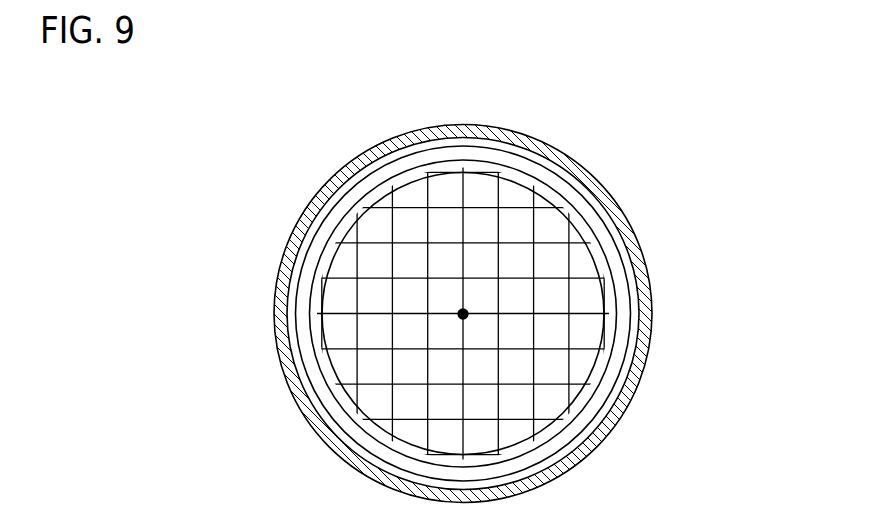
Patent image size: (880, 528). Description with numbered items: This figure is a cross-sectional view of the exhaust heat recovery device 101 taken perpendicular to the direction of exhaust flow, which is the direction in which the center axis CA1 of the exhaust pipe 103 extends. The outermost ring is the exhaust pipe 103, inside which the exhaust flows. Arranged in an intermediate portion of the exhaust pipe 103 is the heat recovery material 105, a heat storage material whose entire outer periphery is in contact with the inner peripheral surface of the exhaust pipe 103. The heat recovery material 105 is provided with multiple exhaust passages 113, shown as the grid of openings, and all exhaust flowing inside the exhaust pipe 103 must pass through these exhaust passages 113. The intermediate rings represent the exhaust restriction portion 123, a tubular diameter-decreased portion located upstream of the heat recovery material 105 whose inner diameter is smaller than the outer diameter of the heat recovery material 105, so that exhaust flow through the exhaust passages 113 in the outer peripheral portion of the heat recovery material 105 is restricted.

The exhaust heat recovery device 101 is at (552, 118).
The exhaust pipe 103 is at (429, 123).
The heat recovery material 105 is at (390, 227).
The exhaust passages 113 is at (552, 328).
The exhaust restriction portion 123 is at (563, 190).
The center axis CA1 is at (463, 314).